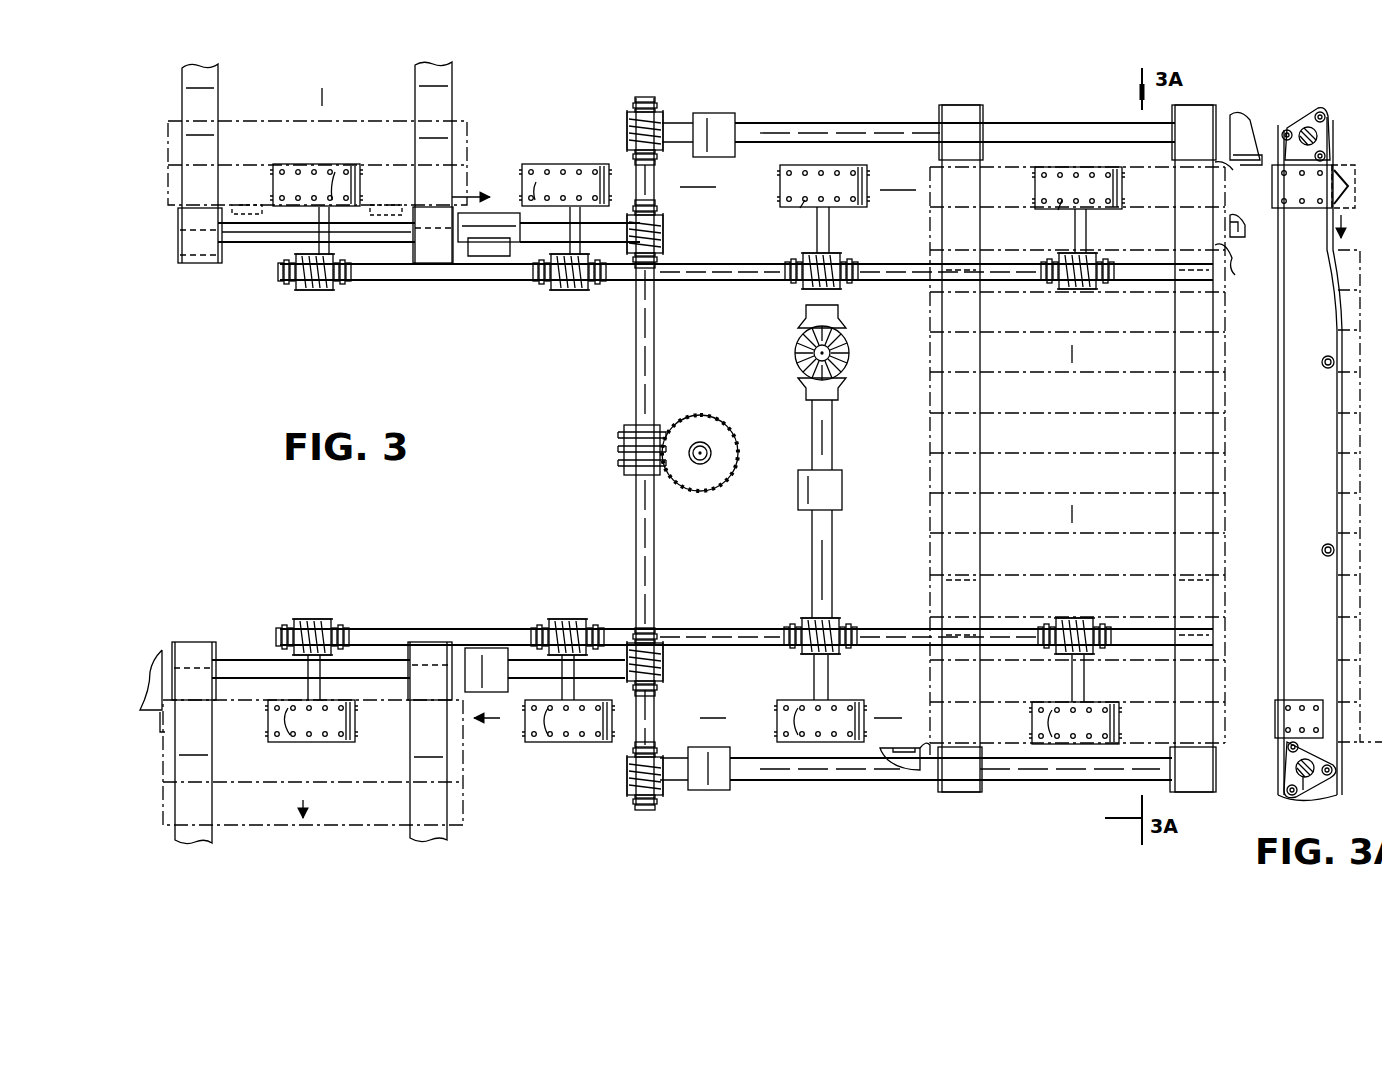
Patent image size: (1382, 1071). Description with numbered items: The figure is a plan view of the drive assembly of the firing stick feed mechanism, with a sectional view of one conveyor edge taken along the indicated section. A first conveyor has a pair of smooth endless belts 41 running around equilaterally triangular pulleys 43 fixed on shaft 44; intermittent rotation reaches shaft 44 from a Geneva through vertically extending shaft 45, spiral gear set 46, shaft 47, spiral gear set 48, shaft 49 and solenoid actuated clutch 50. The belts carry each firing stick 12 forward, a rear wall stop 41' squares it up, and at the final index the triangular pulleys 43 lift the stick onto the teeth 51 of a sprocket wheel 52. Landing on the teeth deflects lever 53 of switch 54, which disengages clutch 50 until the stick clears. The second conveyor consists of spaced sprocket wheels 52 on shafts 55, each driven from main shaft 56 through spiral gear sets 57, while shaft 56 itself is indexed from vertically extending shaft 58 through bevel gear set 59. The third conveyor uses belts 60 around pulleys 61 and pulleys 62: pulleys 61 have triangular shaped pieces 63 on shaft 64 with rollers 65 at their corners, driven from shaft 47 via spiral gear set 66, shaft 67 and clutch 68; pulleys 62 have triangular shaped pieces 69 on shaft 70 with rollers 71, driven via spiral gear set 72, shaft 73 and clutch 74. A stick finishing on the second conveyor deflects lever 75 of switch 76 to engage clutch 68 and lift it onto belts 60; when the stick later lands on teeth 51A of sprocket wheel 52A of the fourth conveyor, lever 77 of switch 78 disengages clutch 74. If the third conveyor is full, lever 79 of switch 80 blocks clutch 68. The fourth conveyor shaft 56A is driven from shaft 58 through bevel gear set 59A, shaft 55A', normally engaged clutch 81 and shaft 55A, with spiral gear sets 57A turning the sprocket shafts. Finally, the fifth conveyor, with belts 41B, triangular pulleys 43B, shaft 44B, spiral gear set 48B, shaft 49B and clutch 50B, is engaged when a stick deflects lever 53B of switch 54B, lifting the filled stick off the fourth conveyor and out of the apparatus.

In FIG. 3, the firing stick 12 is at (467, 138).
In FIG. 3A, the firing stick 12 is at (1342, 488).
In FIG. 3, the endless belts 41 is at (335, 162).
In FIG. 3, the rear wall stop 41' is at (337, 193).
In FIG. 3, the endless belts 41B is at (450, 802).
In FIG. 3, the pulleys 43 is at (180, 242).
In FIG. 3, the triangular pulleys 43B is at (216, 655).
In FIG. 3, the shaft 44 is at (258, 242).
In FIG. 3, the shaft 44B is at (375, 668).
In FIG. 3, the vertically extending shaft 45 is at (707, 447).
In FIG. 3, the spiral gear set 46 is at (662, 436).
In FIG. 3, the shaft 47 is at (655, 384).
In FIG. 3, the spiral gear set 48 is at (664, 232).
In FIG. 3, the spiral gear set 48B is at (664, 670).
In FIG. 3, the shaft 49 is at (536, 242).
In FIG. 3, the shaft 49B is at (520, 665).
In FIG. 3, the solenoid actuated clutch 50 is at (492, 258).
In FIG. 3, the solenoid actuated clutch 50B is at (495, 646).
In FIG. 3, the teeth 51 is at (335, 172).
In FIG. 3A, the teeth 51 is at (1350, 187).
In FIG. 3, the teeth 51A is at (288, 720).
In FIG. 3, the sprocket wheel 52 is at (298, 166).
In FIG. 3A, the sprocket wheel 52 is at (1296, 208).
In FIG. 3, the sprocket wheel 52A is at (302, 742).
In FIG. 3, the lever 53 is at (446, 208).
In FIG. 3, the lever 53B is at (160, 732).
In FIG. 3, the switch 54 is at (485, 213).
In FIG. 3, the switch 54B is at (162, 655).
In FIG. 3, the shafts 55 is at (330, 218).
In FIG. 3, the shaft 55A is at (696, 616).
In FIG. 3, the shaft 55A' is at (853, 435).
In FIG. 3, the main shaft 56 is at (878, 266).
In FIG. 3, the shaft 56A is at (910, 630).
In FIG. 3, the spiral gear sets 57 is at (312, 288).
In FIG. 3, the spiral gear sets 57A is at (310, 622).
In FIG. 3, the vertically extending shaft 58 is at (850, 350).
In FIG. 3, the bevel gear set 59 is at (802, 328).
In FIG. 3, the bevel gear set 59A is at (804, 382).
In FIG. 3, the endless belts 60 is at (976, 395).
In FIG. 3A, the endless belts 60 is at (1285, 455).
In FIG. 3A, the pulleys 61 is at (1302, 106).
In FIG. 3A, the pulleys 62 is at (1280, 765).
In FIG. 3A, the triangular shaped pieces 63 is at (1306, 122).
In FIG. 3, the shaft 64 is at (1056, 125).
In FIG. 3A, the shaft 64 is at (1318, 137).
In FIG. 3A, the rollers 65 is at (1325, 115).
In FIG. 3, the spiral gear set 66 is at (632, 125).
In FIG. 3, the shaft 67 is at (686, 122).
In FIG. 3, the solenoid actuated clutch 68 is at (724, 122).
In FIG. 3A, the triangular shaped pieces 69 is at (1311, 779).
In FIG. 3, the shaft 70 is at (1105, 770).
In FIG. 3A, the shaft 70 is at (1303, 790).
In FIG. 3A, the rollers 71 is at (1287, 748).
In FIG. 3, the spiral gear set 72 is at (625, 775).
In FIG. 3, the shaft 73 is at (674, 782).
In FIG. 3, the clutch 74 is at (700, 755).
In FIG. 3, the lever 75 is at (1232, 170).
In FIG. 3, the switch 76 is at (1237, 125).
In FIG. 3, the lever 77 is at (924, 742).
In FIG. 3, the switch 78 is at (900, 741).
In FIG. 3, the lever 79 is at (1233, 268).
In FIG. 3, the switch 80 is at (1243, 222).
In FIG. 3, the solenoid actuated clutch 81 is at (844, 482).